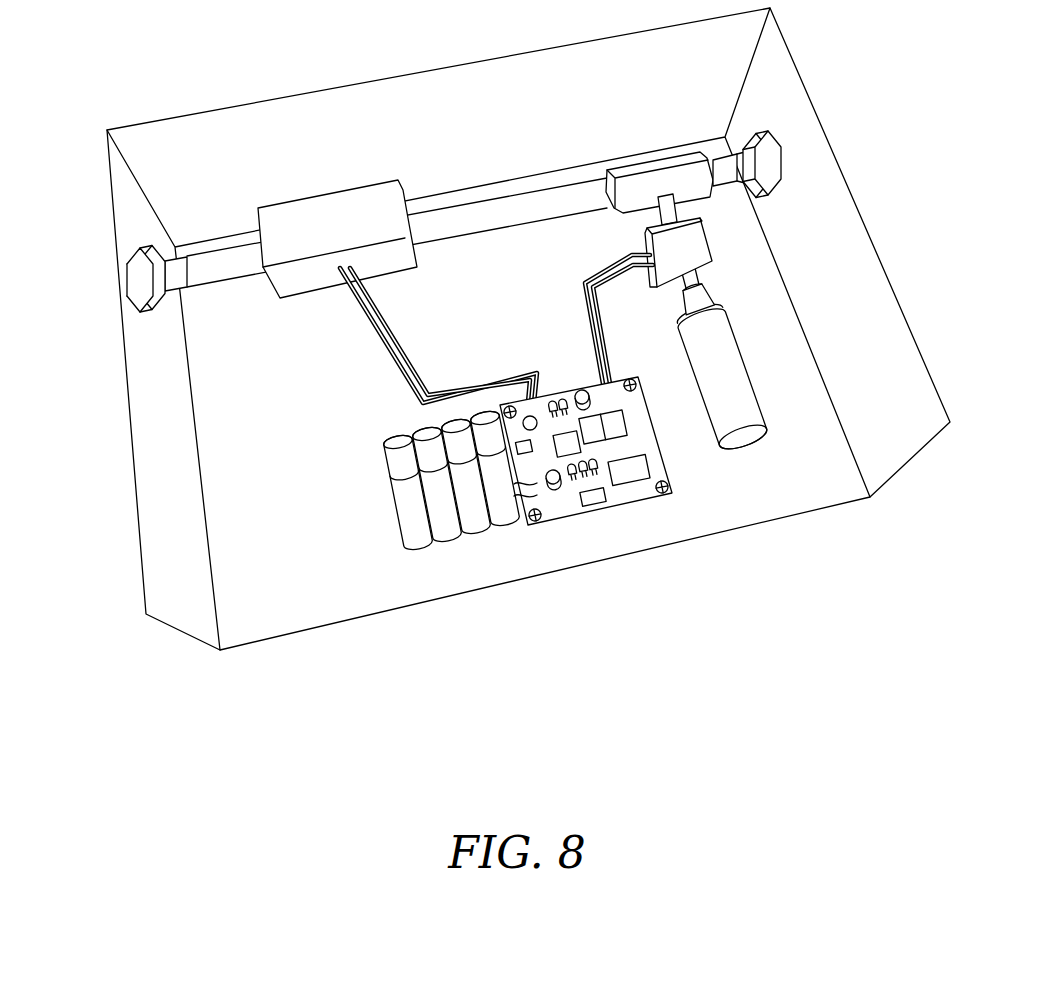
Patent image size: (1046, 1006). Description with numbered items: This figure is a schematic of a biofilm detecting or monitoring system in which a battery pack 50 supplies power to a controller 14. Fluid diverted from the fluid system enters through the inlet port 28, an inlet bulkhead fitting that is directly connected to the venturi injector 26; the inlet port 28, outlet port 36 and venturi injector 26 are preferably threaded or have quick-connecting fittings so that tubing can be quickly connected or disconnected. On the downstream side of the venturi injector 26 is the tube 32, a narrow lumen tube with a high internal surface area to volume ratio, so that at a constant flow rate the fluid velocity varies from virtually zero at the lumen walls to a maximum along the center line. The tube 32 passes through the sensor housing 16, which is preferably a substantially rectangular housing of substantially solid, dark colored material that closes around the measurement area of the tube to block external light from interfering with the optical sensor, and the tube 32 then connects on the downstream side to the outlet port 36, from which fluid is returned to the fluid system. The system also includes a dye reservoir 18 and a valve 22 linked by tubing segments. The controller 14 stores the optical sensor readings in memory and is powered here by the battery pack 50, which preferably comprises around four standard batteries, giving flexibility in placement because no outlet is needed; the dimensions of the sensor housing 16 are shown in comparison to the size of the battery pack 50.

The controller 14 is at (613, 493).
The sensor housing 16 is at (317, 210).
The dye reservoir 18 is at (745, 435).
The valve 22 is at (702, 240).
The venturi injector 26 is at (667, 162).
The inlet port 28 is at (775, 140).
The tube 32 is at (523, 205).
The outlet port 36 is at (132, 283).
The battery pack 50 is at (478, 532).